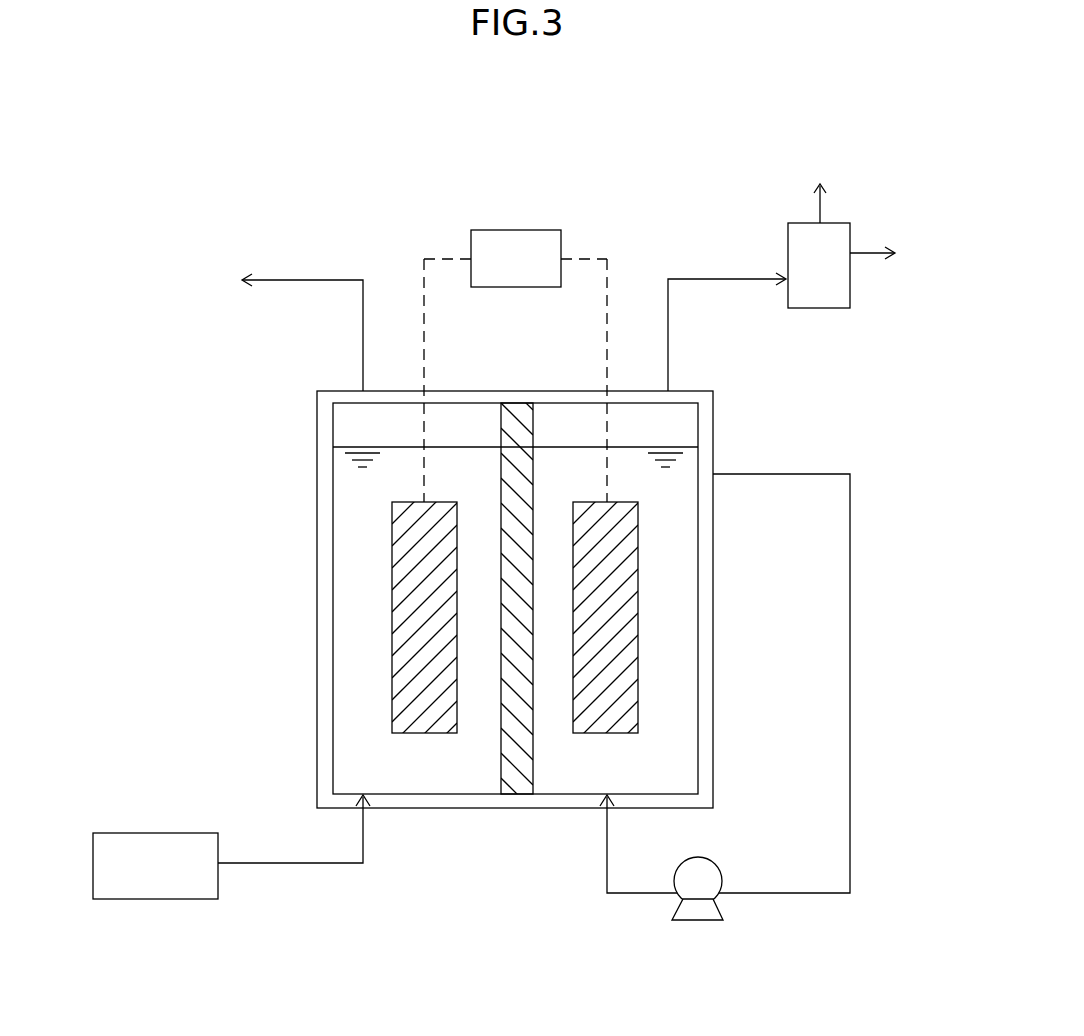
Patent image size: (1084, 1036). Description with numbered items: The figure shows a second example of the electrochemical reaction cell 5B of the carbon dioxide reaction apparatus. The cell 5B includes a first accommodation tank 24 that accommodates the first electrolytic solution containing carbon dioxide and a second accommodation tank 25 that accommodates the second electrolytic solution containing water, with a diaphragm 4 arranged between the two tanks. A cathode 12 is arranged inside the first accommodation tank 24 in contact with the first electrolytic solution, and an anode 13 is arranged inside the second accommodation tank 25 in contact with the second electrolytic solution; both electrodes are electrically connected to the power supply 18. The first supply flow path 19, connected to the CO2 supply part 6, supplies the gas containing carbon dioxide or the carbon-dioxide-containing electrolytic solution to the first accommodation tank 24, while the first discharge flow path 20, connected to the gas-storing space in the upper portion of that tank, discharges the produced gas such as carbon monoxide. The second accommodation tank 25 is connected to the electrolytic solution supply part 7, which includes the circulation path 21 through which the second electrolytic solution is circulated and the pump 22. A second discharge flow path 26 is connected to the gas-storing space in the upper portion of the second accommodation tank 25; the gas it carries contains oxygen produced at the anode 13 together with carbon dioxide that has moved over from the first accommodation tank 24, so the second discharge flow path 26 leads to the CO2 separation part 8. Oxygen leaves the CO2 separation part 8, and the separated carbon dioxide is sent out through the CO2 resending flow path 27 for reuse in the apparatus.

The diaphragm 4 is at (518, 418).
The electrochemical reaction cell 5B is at (518, 822).
The CO2 supply part 6 is at (148, 832).
The electrolytic solution supply part 7 is at (881, 574).
The CO2 separation part 8 is at (850, 290).
The cathode 12 is at (425, 560).
The anode 13 is at (610, 557).
The power supply 18 is at (471, 237).
The first supply flow path 19 is at (276, 862).
The first discharge flow path 20 is at (305, 278).
The circulation path 21 is at (851, 796).
The pump 22 is at (698, 922).
The first accommodation tank 24 is at (352, 641).
The second accommodation tank 25 is at (680, 645).
The second discharge flow path 26 is at (718, 282).
The CO2 resending flow path 27 is at (818, 207).